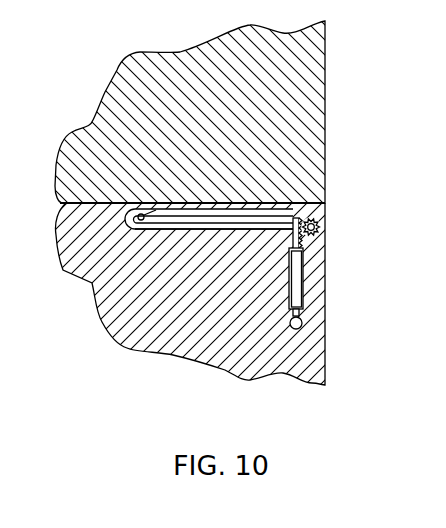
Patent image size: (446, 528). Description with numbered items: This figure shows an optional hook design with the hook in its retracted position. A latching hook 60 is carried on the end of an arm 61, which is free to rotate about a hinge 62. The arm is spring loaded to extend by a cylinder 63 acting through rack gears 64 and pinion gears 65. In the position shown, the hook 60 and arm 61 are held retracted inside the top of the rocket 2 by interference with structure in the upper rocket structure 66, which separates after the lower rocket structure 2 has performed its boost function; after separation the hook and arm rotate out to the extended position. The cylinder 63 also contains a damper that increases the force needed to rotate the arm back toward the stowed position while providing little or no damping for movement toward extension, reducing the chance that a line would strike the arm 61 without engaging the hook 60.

The upper rocket structure 66 is at (320, 113).
The rocket 2 is at (175, 335).
The latching hook 60 is at (132, 222).
The arm 61 is at (164, 230).
The rack gears 64 is at (290, 248).
The hinge 62 is at (313, 222).
The pinion gears 65 is at (318, 230).
The cylinder 63 is at (303, 293).